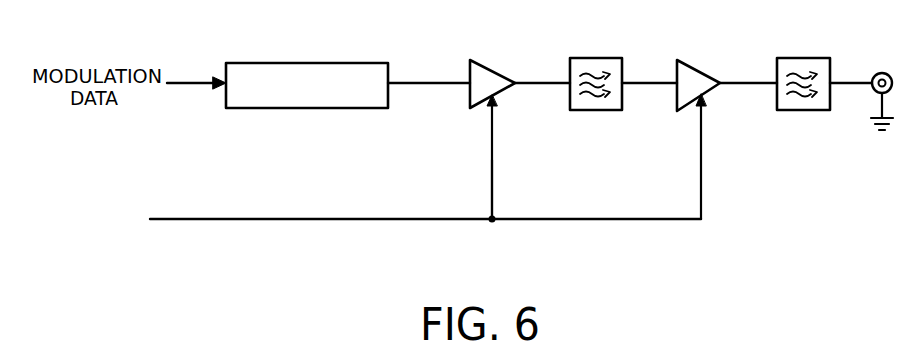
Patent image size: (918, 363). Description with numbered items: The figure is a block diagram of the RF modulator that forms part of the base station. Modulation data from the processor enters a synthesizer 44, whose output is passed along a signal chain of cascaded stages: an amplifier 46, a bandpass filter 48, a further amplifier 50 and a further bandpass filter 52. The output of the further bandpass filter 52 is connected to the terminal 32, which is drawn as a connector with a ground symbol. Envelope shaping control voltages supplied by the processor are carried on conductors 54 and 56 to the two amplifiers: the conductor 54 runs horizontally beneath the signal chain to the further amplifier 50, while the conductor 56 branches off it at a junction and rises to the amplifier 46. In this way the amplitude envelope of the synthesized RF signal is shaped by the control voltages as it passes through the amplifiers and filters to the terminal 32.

The terminal 32 is at (878, 72).
The synthesizer 44 is at (315, 108).
The amplifier 46 is at (490, 69).
The bandpass filter 48 is at (601, 58).
The further amplifier 50 is at (697, 68).
The further bandpass filter 52 is at (808, 58).
The conductor 54 is at (318, 220).
The conductor 56 is at (491, 158).